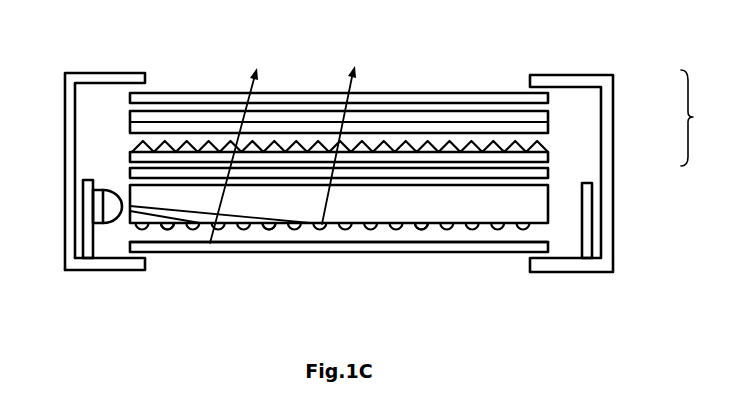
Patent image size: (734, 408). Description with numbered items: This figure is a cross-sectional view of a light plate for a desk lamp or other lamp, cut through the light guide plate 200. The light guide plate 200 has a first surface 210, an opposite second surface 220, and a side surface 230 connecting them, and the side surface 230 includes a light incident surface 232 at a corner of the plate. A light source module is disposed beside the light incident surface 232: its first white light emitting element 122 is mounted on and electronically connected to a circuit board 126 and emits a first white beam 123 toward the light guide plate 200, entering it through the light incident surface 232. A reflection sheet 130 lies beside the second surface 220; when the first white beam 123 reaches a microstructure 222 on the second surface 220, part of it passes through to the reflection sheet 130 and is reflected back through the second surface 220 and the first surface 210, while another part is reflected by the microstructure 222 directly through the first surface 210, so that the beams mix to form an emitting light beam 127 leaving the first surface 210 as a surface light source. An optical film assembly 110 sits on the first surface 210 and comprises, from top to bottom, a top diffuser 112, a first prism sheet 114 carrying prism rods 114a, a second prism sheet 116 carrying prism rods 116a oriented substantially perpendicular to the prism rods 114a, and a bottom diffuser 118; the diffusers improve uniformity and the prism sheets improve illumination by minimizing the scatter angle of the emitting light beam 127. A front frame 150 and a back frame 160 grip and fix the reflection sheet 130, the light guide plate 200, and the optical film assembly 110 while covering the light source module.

The optical film assembly 110 is at (700, 118).
The top diffuser 112 is at (550, 101).
The first prism sheet 114 is at (550, 131).
The prism rod 114a is at (298, 120).
The second prism sheet 116 is at (550, 160).
The prism rod 116a is at (180, 140).
The bottom diffuser 118 is at (550, 176).
The first white light emitting element 122 is at (125, 190).
The first white beam 123 is at (161, 231).
The circuit board 126 is at (98, 207).
The emitting light beam 127 is at (250, 88).
The reflection sheet 130 is at (315, 246).
The front frame 150 is at (106, 78).
The back frame 160 is at (113, 272).
The light guide plate 200 is at (520, 226).
The first surface 210 is at (549, 183).
The second surface 220 is at (467, 228).
The microstructure 222 is at (430, 230).
The side surface 230 is at (548, 208).
The light incident surface 232 is at (107, 190).